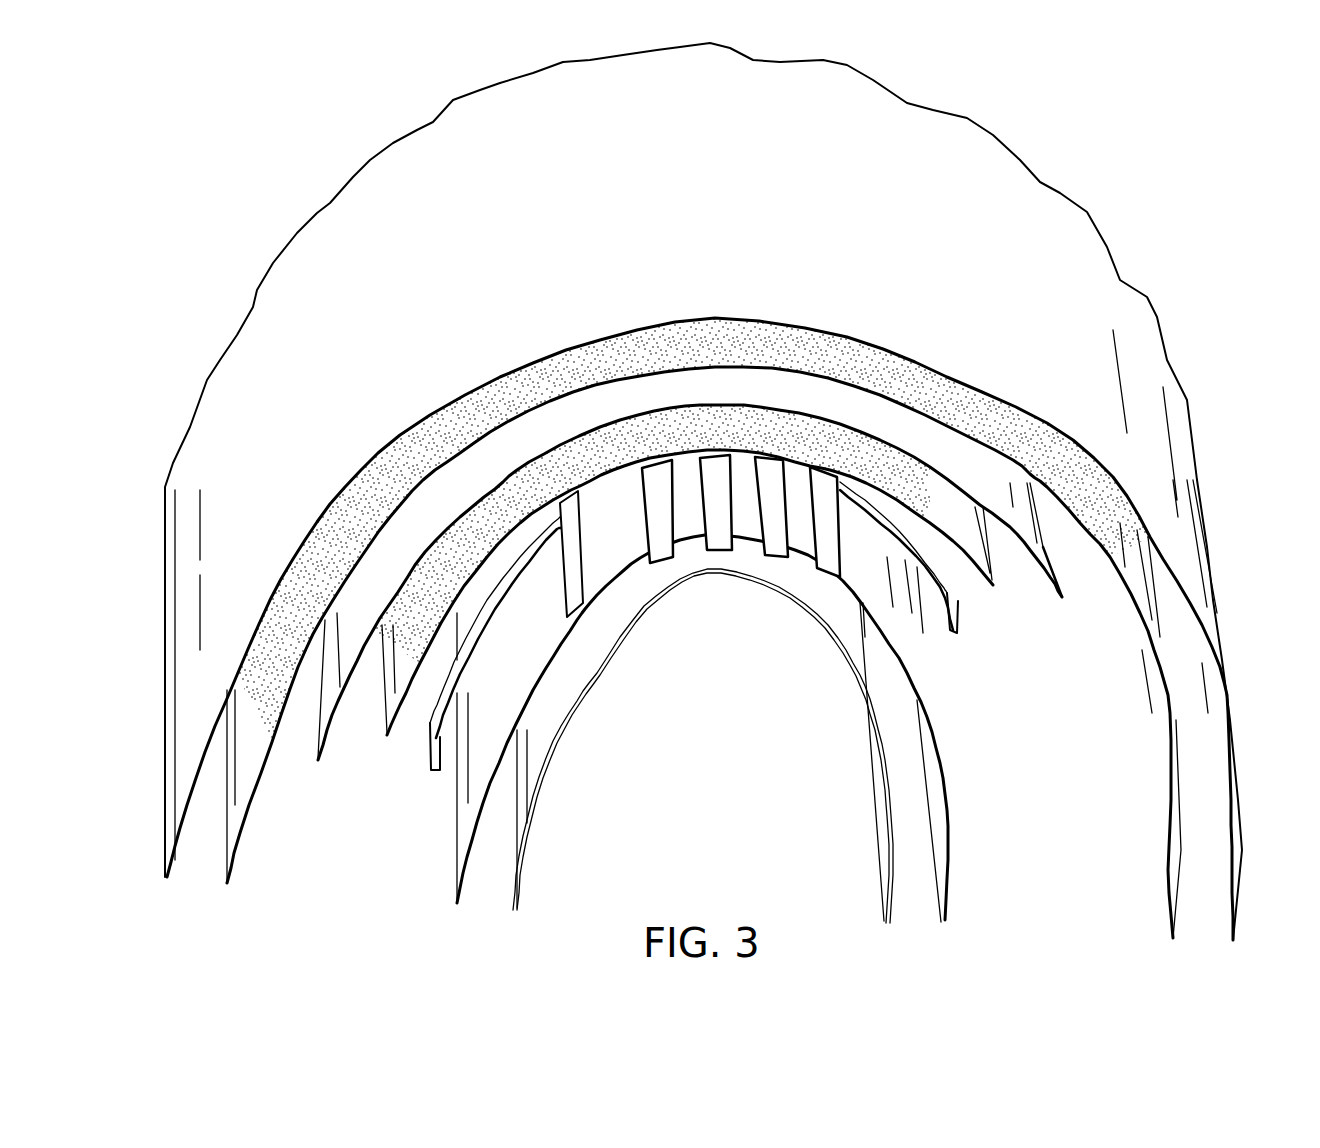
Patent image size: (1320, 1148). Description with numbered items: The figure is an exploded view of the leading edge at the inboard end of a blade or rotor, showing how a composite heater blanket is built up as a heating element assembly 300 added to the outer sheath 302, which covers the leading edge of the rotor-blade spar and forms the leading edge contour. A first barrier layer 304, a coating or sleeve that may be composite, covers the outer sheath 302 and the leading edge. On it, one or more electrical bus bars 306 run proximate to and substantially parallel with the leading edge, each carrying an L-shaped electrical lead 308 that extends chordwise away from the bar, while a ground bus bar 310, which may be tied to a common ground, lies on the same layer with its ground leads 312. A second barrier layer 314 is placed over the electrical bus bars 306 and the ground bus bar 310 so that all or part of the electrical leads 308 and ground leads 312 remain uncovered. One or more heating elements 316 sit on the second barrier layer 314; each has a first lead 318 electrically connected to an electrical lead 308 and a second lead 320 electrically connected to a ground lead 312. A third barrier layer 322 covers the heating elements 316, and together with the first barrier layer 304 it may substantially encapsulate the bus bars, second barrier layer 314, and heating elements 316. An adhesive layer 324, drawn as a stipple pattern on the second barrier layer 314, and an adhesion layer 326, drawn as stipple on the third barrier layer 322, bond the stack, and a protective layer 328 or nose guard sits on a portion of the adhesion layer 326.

The heating element assembly 300 is at (286, 107).
The outer sheath 302 is at (887, 917).
The first barrier layer 304 is at (948, 887).
The electrical bus bars 306 is at (717, 543).
The electrical lead 308 is at (953, 610).
The ground bus bar 310 is at (557, 613).
The ground leads 312 is at (430, 755).
The second barrier layer 314 is at (957, 500).
The heating elements 316 is at (673, 375).
The first lead 318 is at (1060, 572).
The second lead 320 is at (318, 737).
The third barrier layer 322 is at (1160, 837).
The adhesive layer 324 is at (780, 432).
The adhesion layer 326 is at (605, 343).
The protective layer 328 is at (940, 124).